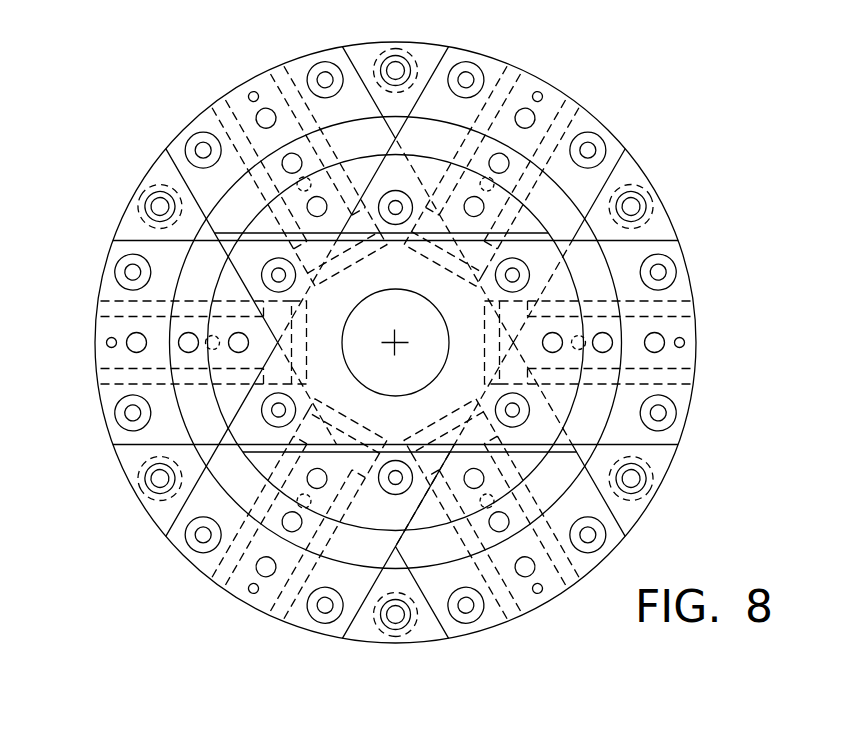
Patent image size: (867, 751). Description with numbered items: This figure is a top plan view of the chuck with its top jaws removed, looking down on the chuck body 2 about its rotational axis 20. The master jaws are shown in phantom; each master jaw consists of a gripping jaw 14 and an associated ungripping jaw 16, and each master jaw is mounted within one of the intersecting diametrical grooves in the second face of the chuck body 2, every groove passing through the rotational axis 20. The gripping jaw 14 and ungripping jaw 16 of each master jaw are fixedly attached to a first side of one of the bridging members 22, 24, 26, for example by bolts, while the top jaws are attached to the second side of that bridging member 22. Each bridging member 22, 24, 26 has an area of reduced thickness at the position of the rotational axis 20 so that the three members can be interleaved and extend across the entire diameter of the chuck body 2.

The chuck body 2 is at (391, 342).
The gripping jaw 14 is at (445, 343).
The ungripping jaw 16 is at (342, 359).
The rotational axis 20 is at (395, 342).
The bridging member 22 is at (417, 343).
The bridging member 24 is at (393, 124).
The bridging member 26 is at (398, 566).